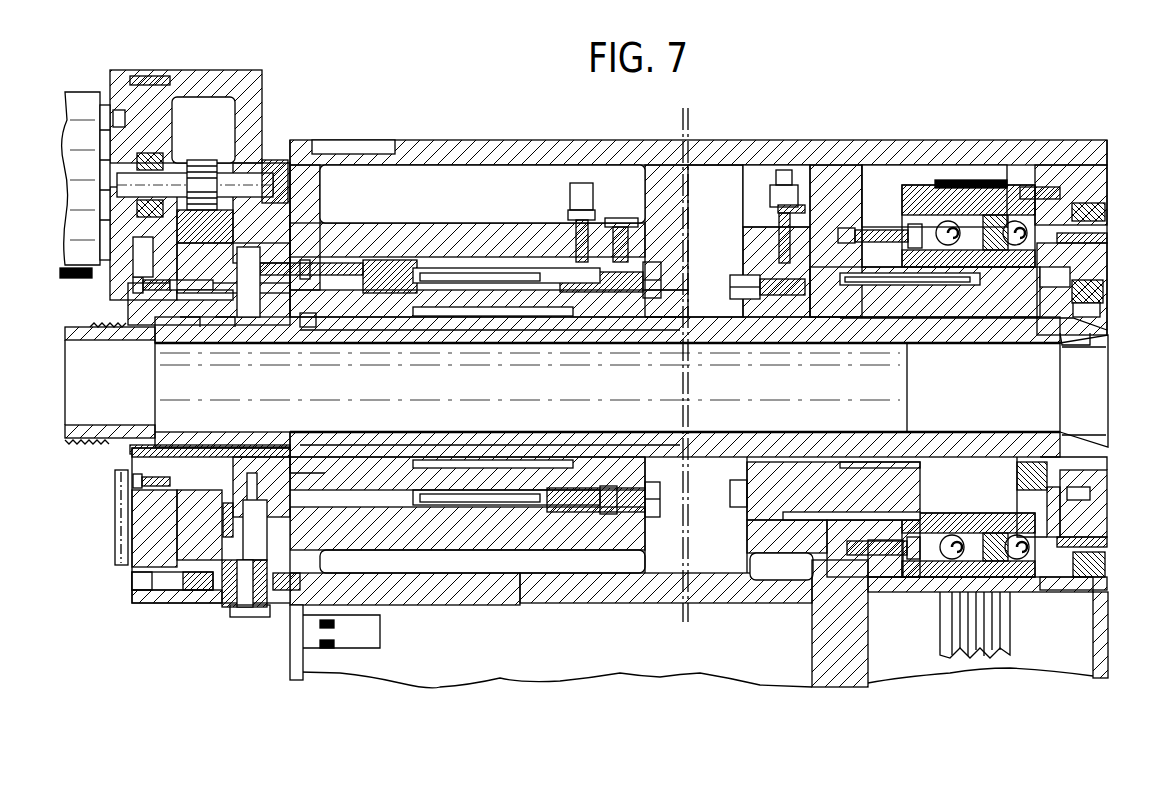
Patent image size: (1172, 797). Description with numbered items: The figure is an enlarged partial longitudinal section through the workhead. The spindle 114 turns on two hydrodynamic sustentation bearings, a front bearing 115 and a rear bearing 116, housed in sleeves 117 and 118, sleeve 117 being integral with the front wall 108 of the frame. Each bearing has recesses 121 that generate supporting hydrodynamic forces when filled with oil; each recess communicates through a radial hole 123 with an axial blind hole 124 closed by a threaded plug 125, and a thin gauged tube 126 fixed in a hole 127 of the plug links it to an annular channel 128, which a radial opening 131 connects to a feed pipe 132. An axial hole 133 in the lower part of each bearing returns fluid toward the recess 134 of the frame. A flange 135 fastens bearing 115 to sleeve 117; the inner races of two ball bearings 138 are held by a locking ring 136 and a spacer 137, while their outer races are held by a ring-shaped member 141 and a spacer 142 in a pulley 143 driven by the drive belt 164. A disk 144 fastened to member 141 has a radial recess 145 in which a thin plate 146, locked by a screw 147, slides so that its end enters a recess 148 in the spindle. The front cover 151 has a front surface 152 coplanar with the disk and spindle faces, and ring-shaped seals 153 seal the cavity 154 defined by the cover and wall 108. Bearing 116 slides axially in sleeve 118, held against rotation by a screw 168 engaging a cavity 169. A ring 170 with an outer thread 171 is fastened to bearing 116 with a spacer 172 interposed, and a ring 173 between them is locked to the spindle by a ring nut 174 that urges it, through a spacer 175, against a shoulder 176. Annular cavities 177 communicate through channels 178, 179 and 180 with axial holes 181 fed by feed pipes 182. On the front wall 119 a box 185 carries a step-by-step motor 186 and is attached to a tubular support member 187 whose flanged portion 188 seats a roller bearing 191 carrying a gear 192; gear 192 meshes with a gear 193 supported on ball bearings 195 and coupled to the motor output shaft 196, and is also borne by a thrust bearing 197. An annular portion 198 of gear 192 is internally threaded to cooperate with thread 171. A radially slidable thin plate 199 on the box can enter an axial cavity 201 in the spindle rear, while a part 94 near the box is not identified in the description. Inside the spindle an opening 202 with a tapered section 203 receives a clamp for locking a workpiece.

The bearing cap 94 is at (258, 118).
The front wall 108 is at (822, 652).
The spindle 114 is at (530, 440).
The front bearing 115 is at (730, 527).
The rear bearing 116 is at (668, 306).
The sleeve 117 is at (742, 246).
The sleeve 118 is at (535, 243).
The front wall 119 is at (312, 182).
The recess 121 is at (460, 330).
The radial hole 123 is at (494, 328).
The axial blind hole 124 is at (877, 283).
The threaded plug 125 is at (740, 290).
The thin gauged tube 126 is at (923, 337).
The hole 127 is at (832, 262).
The annular channel 128 is at (823, 183).
The radial opening 131 is at (787, 247).
The feed pipe 132 is at (783, 178).
The axial hole 133 is at (807, 500).
The recess 134 is at (662, 563).
The flange 135 is at (877, 560).
The locking ring 136 is at (1099, 242).
The spacer 137 is at (988, 250).
The ball bearings 138 is at (928, 183).
The ring-shaped member 141 is at (1104, 197).
The spacer 142 is at (982, 178).
The pulley 143 is at (907, 188).
The disk 144 is at (1098, 214).
The radial recess 145 is at (1102, 255).
The thin plate 146 is at (1104, 296).
The screw 147 is at (1103, 310).
The cavity 148 is at (1074, 341).
The front cover 151 is at (1106, 150).
The front surface 152 is at (1110, 620).
The ring-shaped seals 153 is at (1062, 335).
The cavity 154 is at (1057, 650).
The drive belt 164 is at (953, 630).
The screw 168 is at (627, 227).
The cavity 169 is at (645, 265).
The ring 170 is at (268, 320).
The outer thread 171 is at (297, 235).
The spacer 172 is at (318, 265).
The ring 173 is at (322, 320).
The ring nut 174 is at (147, 345).
The spacer 175 is at (200, 318).
The shoulder 176 is at (322, 443).
The annular cavities 177 is at (281, 533).
The channel 178 is at (378, 298).
The channel 179 is at (355, 535).
The channel 180 is at (260, 607).
The axial holes 181 is at (475, 287).
The feed pipes 182 is at (573, 168).
The box 185 is at (205, 78).
The step-by-step motor 186 is at (75, 102).
The support member 187 is at (128, 305).
The flanged portion 188 is at (128, 465).
The roller bearing 191 is at (225, 318).
The gear 192 is at (218, 160).
The gear 193 is at (200, 160).
The ball bearings 195 is at (160, 80).
The output shaft 196 is at (115, 198).
The thrust bearing 197 is at (130, 262).
The annular portion 198 is at (268, 250).
The plate 199 is at (120, 522).
The axial cavity 201 is at (98, 440).
The opening 202 is at (1050, 393).
The tapered section 203 is at (1088, 438).